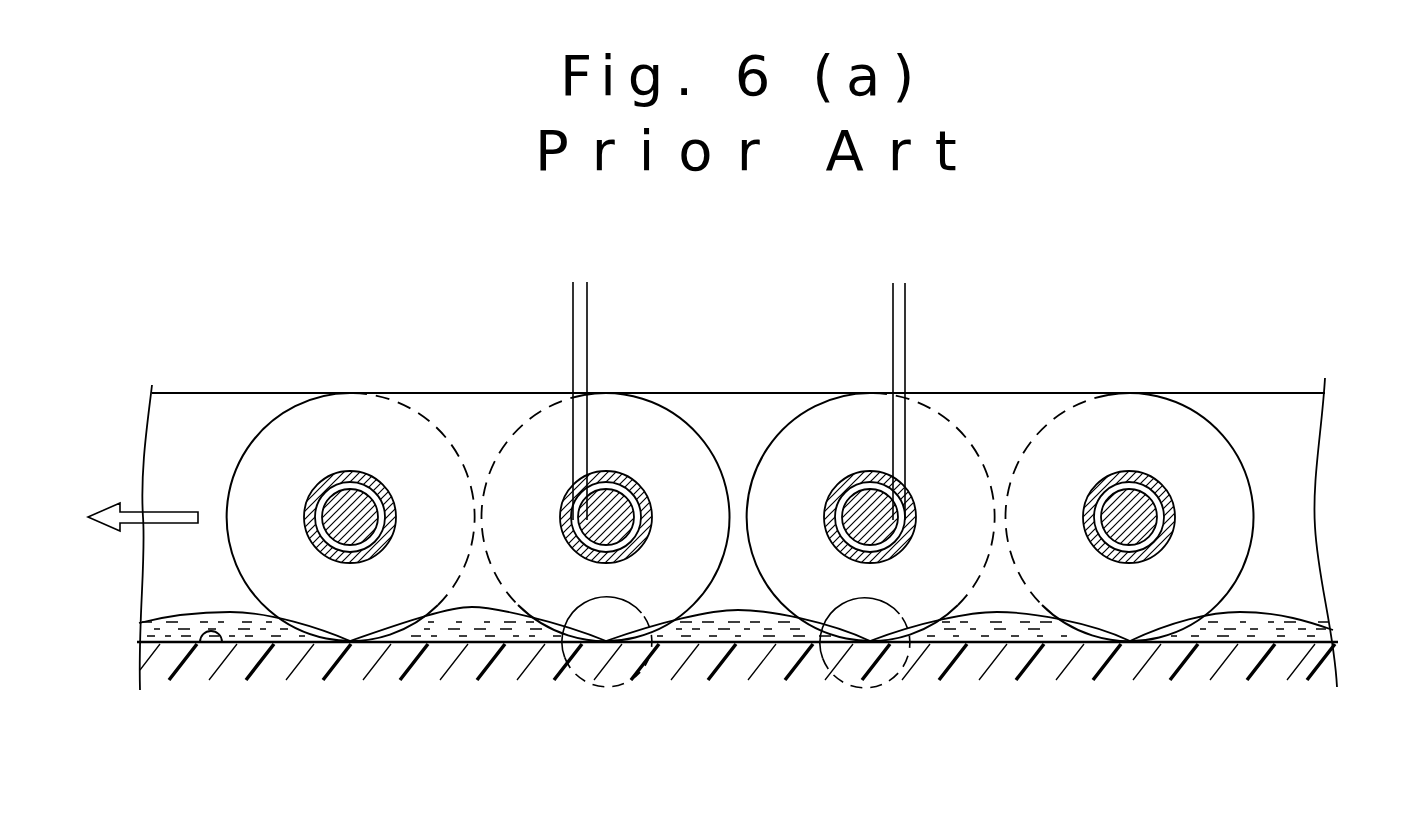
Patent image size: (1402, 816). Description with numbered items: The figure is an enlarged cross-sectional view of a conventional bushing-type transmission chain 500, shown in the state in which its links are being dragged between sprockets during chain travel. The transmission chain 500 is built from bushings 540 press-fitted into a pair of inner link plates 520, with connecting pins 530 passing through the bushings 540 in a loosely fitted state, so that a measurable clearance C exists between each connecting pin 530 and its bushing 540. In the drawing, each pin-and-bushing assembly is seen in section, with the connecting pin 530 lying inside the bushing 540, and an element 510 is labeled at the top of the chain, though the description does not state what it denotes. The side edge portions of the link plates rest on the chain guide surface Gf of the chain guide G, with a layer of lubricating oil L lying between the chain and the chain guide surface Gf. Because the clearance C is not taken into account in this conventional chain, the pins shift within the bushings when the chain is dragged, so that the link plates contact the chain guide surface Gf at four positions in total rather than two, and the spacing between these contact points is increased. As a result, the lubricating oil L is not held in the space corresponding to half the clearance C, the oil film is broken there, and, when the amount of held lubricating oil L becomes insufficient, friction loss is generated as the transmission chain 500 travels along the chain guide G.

The transmission chain 500 is at (795, 362).
The roller holding member 510 is at (813, 392).
The inner link plate 520 is at (490, 392).
The connecting pin 530 is at (358, 500).
The bushing 540 is at (333, 472).
The clearance C is at (538, 290).
The chain guide G is at (1327, 657).
The chain guide surface Gf is at (205, 645).
The lubricating oil L is at (490, 623).